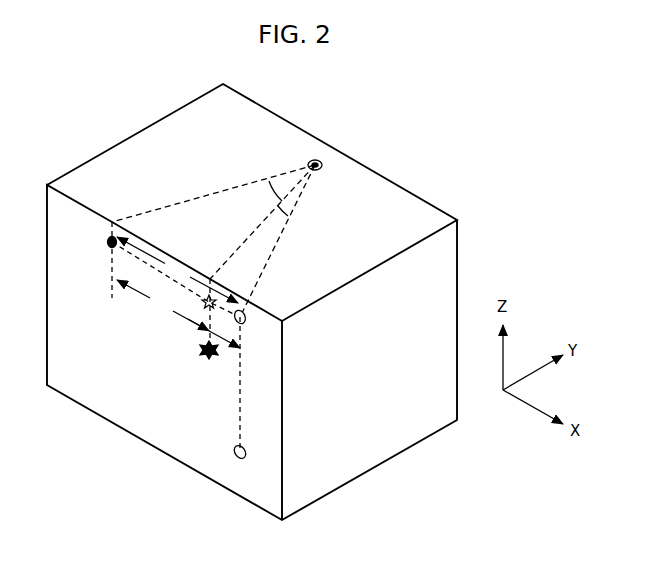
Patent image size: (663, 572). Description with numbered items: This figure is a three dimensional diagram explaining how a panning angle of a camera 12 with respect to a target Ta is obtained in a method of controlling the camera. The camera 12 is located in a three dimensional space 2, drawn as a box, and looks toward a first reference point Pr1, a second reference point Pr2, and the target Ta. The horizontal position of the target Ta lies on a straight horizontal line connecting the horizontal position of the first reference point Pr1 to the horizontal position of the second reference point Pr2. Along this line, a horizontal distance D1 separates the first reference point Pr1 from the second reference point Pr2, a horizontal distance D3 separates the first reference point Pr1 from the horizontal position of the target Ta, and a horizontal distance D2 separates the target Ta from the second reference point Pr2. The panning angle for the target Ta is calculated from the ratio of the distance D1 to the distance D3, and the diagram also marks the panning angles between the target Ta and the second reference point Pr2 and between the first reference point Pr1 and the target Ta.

The three dimensional space 2 is at (400, 184).
The camera 12 is at (322, 161).
The first reference point Pr1 is at (108, 247).
The second reference point Pr2 is at (233, 450).
The target Ta is at (203, 354).
The horizontal distance between the first reference point and the second reference p D1 is at (182, 281).
The horizontal distance between the target and the second reference point D2 is at (214, 365).
The horizontal distance between the first reference point and the horizontal positio D3 is at (178, 314).